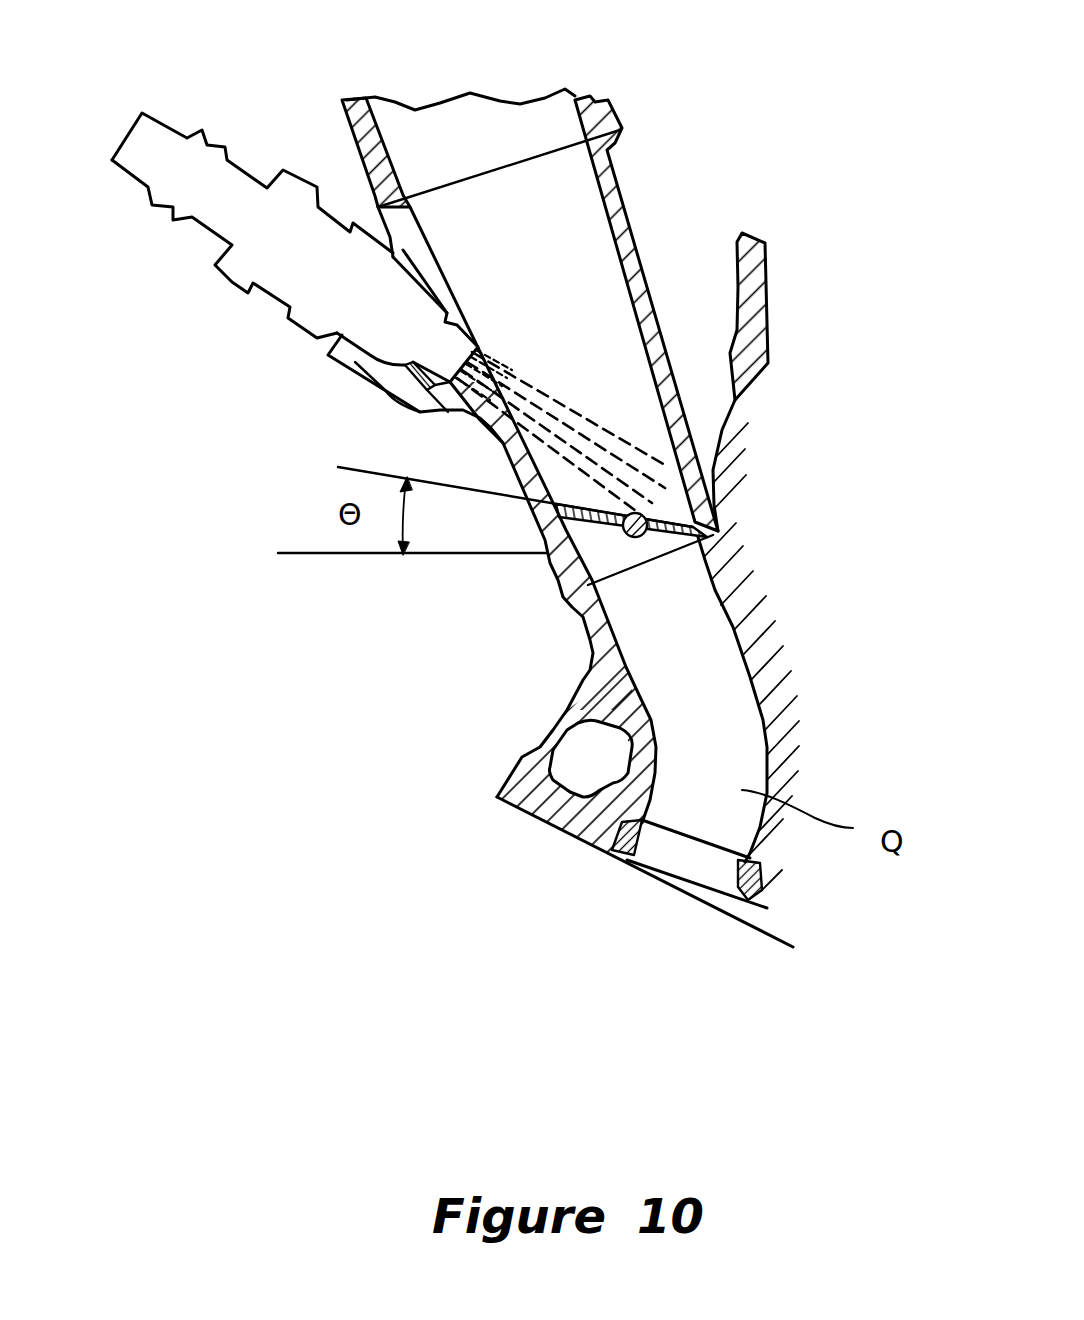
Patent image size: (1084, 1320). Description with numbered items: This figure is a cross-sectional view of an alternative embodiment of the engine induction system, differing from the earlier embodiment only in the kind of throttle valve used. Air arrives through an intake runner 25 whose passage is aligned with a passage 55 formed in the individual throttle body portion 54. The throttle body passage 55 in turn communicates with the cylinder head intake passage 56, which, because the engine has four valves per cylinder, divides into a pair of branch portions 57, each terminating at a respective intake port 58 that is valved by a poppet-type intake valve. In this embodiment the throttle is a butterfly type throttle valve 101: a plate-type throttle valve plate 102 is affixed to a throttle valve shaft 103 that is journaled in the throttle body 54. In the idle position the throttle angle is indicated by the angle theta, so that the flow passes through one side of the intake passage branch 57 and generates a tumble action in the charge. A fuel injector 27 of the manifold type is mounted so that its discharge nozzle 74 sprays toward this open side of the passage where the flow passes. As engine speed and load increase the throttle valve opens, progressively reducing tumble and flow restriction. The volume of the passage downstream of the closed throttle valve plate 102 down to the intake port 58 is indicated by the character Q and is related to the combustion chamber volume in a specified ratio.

The intake runner 25 is at (593, 102).
The fuel injector 27 is at (228, 285).
The throttle body portion 54 is at (648, 292).
The throttle body passage 55 is at (660, 412).
The cylinder head intake passage 56 is at (628, 702).
The branch portion 57 is at (737, 740).
The intake port 58 is at (640, 843).
The discharge nozzle 74 is at (457, 347).
The butterfly type throttle valve 101 is at (597, 543).
The throttle valve plate 102 is at (710, 567).
The throttle valve shaft 103 is at (633, 538).